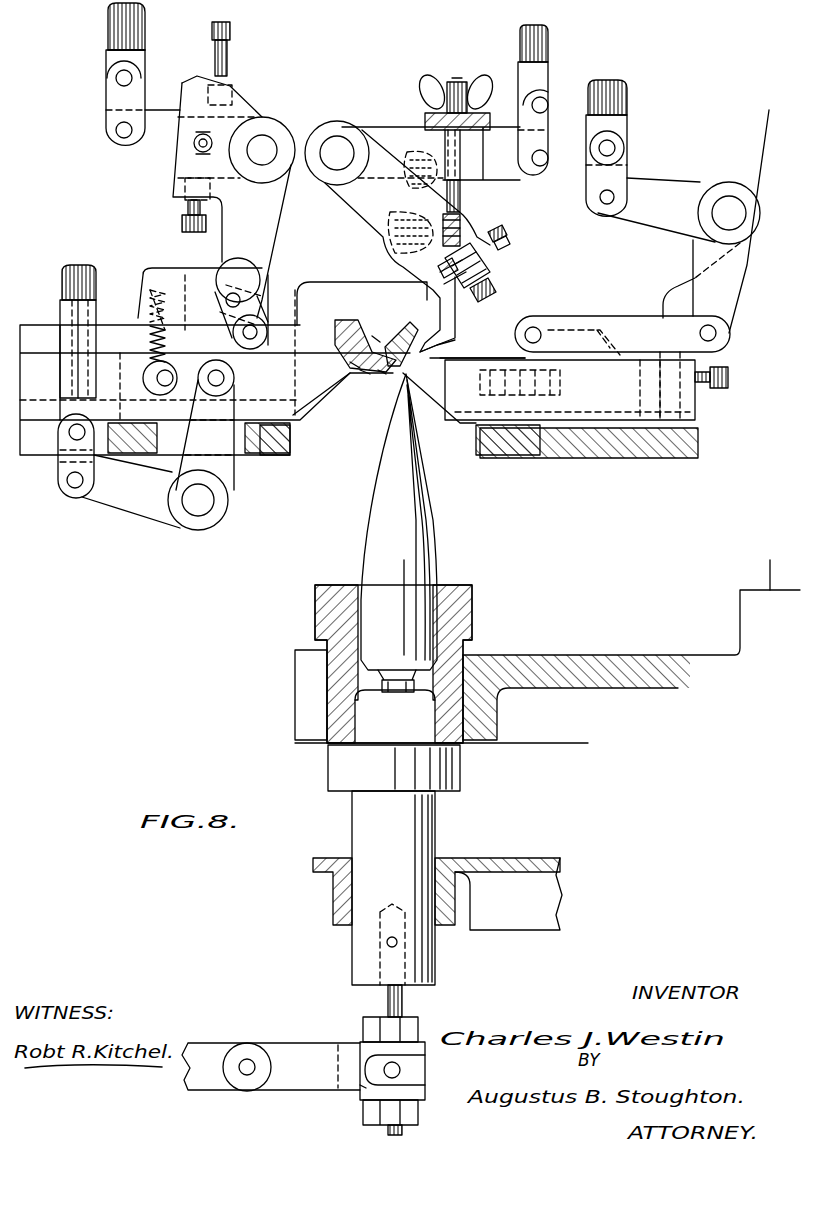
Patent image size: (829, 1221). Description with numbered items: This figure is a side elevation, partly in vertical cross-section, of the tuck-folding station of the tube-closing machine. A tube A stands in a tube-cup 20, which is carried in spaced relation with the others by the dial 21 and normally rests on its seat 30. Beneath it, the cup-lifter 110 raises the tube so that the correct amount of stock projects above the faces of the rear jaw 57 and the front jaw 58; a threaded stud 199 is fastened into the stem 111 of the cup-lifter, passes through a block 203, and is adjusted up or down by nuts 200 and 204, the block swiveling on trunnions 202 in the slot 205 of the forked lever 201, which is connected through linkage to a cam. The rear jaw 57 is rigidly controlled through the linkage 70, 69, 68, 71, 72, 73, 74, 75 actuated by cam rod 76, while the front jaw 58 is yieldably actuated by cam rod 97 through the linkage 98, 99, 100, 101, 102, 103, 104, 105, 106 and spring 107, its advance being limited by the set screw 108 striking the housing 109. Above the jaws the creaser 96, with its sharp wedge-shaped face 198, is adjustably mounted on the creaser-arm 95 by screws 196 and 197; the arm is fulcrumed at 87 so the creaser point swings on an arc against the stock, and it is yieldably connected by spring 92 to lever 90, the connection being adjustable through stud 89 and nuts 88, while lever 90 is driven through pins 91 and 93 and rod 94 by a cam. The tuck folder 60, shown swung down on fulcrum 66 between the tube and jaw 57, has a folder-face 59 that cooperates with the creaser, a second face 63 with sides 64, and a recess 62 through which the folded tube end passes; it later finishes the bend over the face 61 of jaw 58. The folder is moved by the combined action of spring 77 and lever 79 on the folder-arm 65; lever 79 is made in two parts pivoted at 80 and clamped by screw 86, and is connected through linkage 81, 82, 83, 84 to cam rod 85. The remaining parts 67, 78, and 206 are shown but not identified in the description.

The tube-cup 20 is at (474, 592).
The dial 21 is at (603, 654).
The seat 30 is at (474, 648).
The rear jaw 57 is at (325, 397).
The front jaw 58 is at (442, 406).
The folder-face 59 is at (398, 330).
The tuck folder 60 is at (346, 320).
The face of jaw 58 61 is at (366, 373).
The recess 62 is at (380, 372).
The second face 63 is at (368, 332).
The sides 64 is at (352, 363).
The folder-arm 65 is at (305, 316).
The fulcrum 66 is at (255, 328).
The frame bar 67 is at (270, 395).
The linkage member 68 is at (224, 380).
The linkage member 69 is at (190, 362).
The linkage member 70 is at (165, 386).
The linkage member 71 is at (226, 460).
The linkage member 72 is at (215, 503).
The linkage member 73 is at (70, 486).
The linkage member 74 is at (58, 458).
The linkage member 75 is at (69, 432).
The cam rod 76 is at (62, 295).
The spring 77 is at (150, 330).
The pivot pin 78 is at (230, 296).
The lever 79 is at (273, 212).
The pivot 80 is at (265, 146).
The linkage member 81 is at (156, 150).
The linkage member 82 is at (116, 132).
The linkage member 83 is at (108, 92).
The linkage member 84 is at (116, 74).
The cam rod 85 is at (108, 22).
The screw 86 is at (200, 135).
The fulcrum 87 is at (337, 148).
The nuts 88 is at (433, 84).
The stud 89 is at (462, 188).
The lever 90 is at (500, 165).
The pin 91 is at (541, 167).
The spring 92 is at (396, 240).
The pin 93 is at (530, 100).
The rod 94 is at (520, 34).
The creaser-arm 95 is at (468, 222).
The creaser 96 is at (492, 279).
The cam rod 97 is at (628, 95).
The linkage member 98 is at (614, 148).
The linkage member 99 is at (620, 172).
The linkage member 100 is at (602, 200).
The linkage member 101 is at (745, 216).
The linkage member 102 is at (740, 270).
The linkage member 103 is at (720, 333).
The linkage member 104 is at (570, 322).
The linkage member 105 is at (533, 328).
The linkage member 106 is at (598, 328).
The spring 107 is at (546, 386).
The set screw 108 is at (730, 386).
The housing 109 is at (705, 446).
The cup-lifter 110 is at (458, 780).
The stem 111 is at (420, 896).
The screw 196 is at (510, 245).
The screw 197 is at (498, 294).
The wedge-shaped face 198 is at (441, 338).
The threaded stud 199 is at (404, 1000).
The nut 200 is at (366, 1026).
The forked lever 201 is at (298, 1046).
The trunnions 202 is at (401, 1069).
The block 203 is at (426, 1082).
The nut 204 is at (414, 1112).
The slot 205 is at (366, 1086).
The pivot 206 is at (245, 1076).
The tube A is at (422, 528).